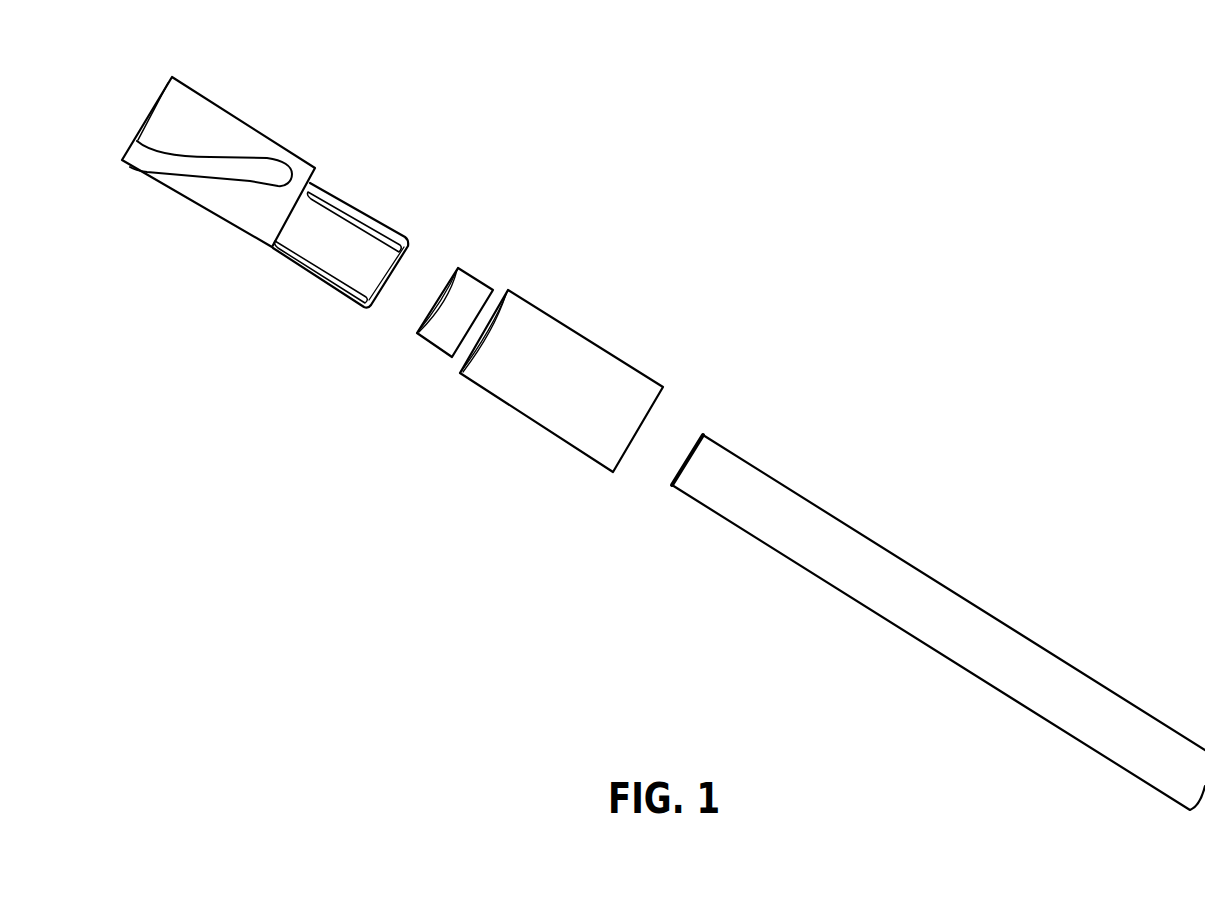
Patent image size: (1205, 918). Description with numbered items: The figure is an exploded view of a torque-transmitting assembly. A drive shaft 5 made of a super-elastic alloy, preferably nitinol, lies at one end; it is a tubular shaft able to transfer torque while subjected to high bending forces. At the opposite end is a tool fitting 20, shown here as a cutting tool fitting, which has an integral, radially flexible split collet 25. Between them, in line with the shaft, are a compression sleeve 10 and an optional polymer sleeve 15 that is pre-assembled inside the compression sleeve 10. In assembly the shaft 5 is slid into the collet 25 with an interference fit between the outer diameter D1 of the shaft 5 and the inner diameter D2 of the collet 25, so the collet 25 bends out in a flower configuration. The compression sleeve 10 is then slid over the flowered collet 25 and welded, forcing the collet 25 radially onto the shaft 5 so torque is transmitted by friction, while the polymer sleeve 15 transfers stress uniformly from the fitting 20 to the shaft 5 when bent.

The drive shaft 5 is at (970, 633).
The compression sleeve 10 is at (593, 360).
The polymer sleeve 15 is at (473, 275).
The tool fitting 20 is at (248, 147).
The collet portion 25 is at (348, 257).
The outer diameter of shaft D1 is at (775, 625).
The inner diameter of collet D2 is at (404, 315).